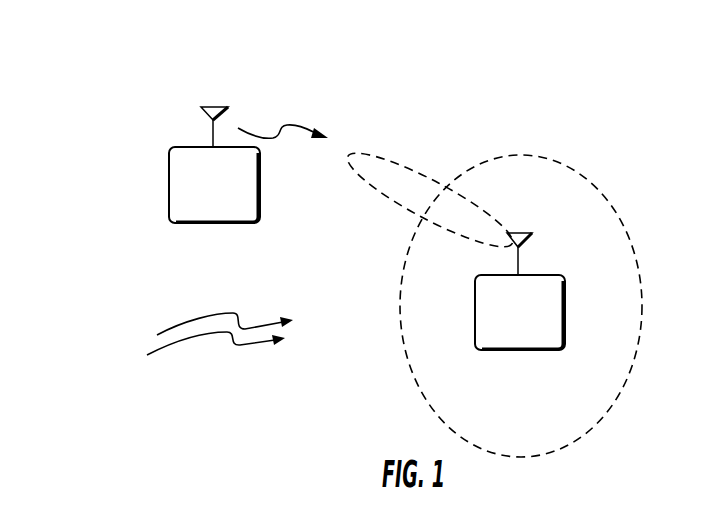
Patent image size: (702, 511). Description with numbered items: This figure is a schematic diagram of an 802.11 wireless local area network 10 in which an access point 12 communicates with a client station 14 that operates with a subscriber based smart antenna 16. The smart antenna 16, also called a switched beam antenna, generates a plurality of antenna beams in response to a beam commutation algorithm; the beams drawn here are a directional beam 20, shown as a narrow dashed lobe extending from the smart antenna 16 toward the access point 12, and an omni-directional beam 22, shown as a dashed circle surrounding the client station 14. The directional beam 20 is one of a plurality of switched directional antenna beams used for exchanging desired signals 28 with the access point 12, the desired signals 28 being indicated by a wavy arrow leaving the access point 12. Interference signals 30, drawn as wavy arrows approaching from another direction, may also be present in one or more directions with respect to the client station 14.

The wireless local area network 10 is at (488, 82).
The access point 12 is at (170, 178).
The client station 14 is at (555, 323).
The smart antenna 16 is at (531, 240).
The directional beam 20 is at (398, 153).
The omni-directional beam 22 is at (590, 182).
The desired signals 28 is at (285, 120).
The interference signals 30 is at (250, 350).